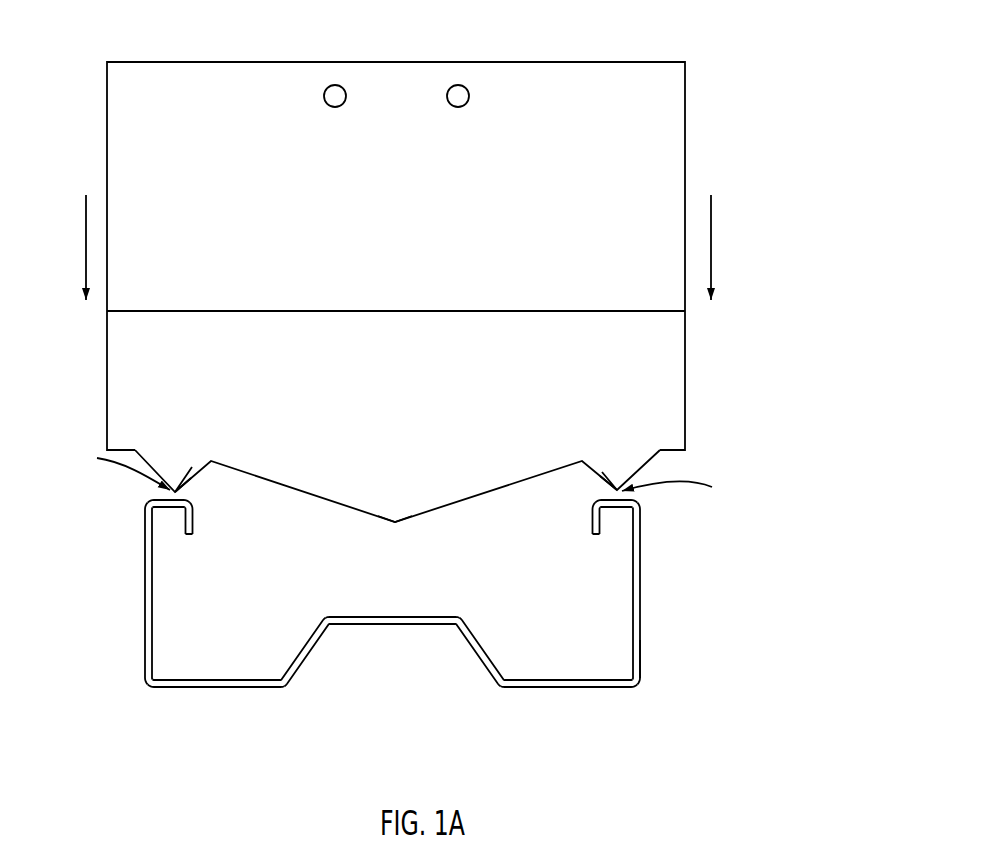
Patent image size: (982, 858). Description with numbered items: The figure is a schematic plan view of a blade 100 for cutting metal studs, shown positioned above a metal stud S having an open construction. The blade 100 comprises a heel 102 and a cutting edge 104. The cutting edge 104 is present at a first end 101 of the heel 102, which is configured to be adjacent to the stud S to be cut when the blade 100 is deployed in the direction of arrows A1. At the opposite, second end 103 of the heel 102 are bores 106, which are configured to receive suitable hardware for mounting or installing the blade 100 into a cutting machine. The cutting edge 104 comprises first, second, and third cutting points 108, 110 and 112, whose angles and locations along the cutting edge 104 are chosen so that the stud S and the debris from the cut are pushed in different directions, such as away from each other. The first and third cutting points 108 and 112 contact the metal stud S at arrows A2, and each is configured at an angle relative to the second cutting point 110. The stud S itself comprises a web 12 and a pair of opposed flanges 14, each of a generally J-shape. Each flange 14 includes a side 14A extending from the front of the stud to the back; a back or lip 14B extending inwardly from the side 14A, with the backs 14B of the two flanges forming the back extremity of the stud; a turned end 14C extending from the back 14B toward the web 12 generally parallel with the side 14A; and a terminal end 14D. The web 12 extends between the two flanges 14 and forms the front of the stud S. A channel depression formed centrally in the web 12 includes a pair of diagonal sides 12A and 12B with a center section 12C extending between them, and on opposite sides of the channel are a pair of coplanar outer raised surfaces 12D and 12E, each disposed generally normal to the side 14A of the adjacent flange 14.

The blade 100 is at (720, 120).
The first end 101 is at (752, 482).
The heel 102 is at (419, 185).
The second end 103 is at (84, 62).
The cutting edge 104 is at (650, 462).
The bores 106 is at (455, 95).
The first cutting point 108 is at (178, 489).
The second cutting point 110 is at (397, 520).
The third cutting point 112 is at (618, 489).
The web 12 is at (410, 706).
The diagonal side 12A is at (497, 658).
The diagonal side 12B is at (313, 650).
The center section 12C is at (449, 625).
The outer raised surface 12D is at (575, 688).
The outer raised surface 12E is at (220, 688).
The flange 14 is at (152, 687).
The side 14A is at (145, 582).
The back 14B is at (146, 503).
The turned end 14C is at (193, 508).
The terminal end 14D is at (189, 537).
The metal stud S is at (641, 680).
The arrows A1 is at (399, 247).
The arrows A2 is at (402, 470).